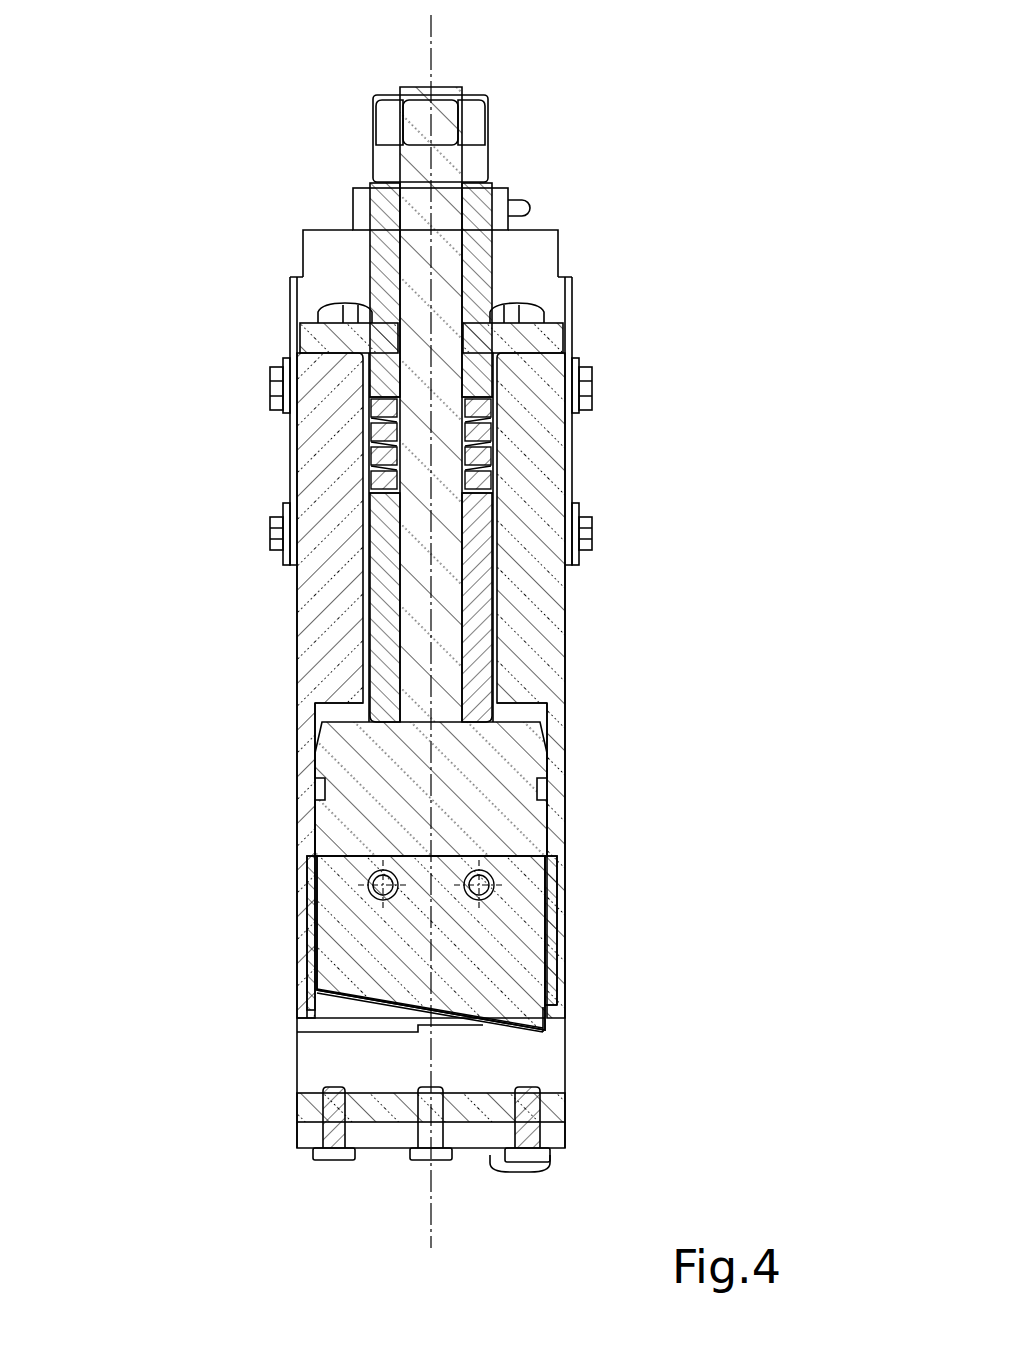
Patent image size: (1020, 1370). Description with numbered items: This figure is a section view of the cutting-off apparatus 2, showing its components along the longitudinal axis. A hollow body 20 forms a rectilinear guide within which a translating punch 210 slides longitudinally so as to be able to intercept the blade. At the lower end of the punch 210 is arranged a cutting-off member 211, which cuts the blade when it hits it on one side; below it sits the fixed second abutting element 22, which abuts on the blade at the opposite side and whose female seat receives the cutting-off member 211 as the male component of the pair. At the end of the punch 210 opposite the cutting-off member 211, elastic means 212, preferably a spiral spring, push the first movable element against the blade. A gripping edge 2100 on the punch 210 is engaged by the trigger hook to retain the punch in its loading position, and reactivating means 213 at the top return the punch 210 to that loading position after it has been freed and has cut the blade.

The cutting-off apparatus 2 is at (413, 631).
The hollow body 20 is at (297, 648).
The translating punch 210 is at (463, 648).
The gripping edge 2100 is at (545, 778).
The cutting-off member 211 is at (523, 943).
The elastic means 212 is at (370, 407).
The reactivating means 213 is at (373, 122).
The second abutting element 22 is at (262, 1073).